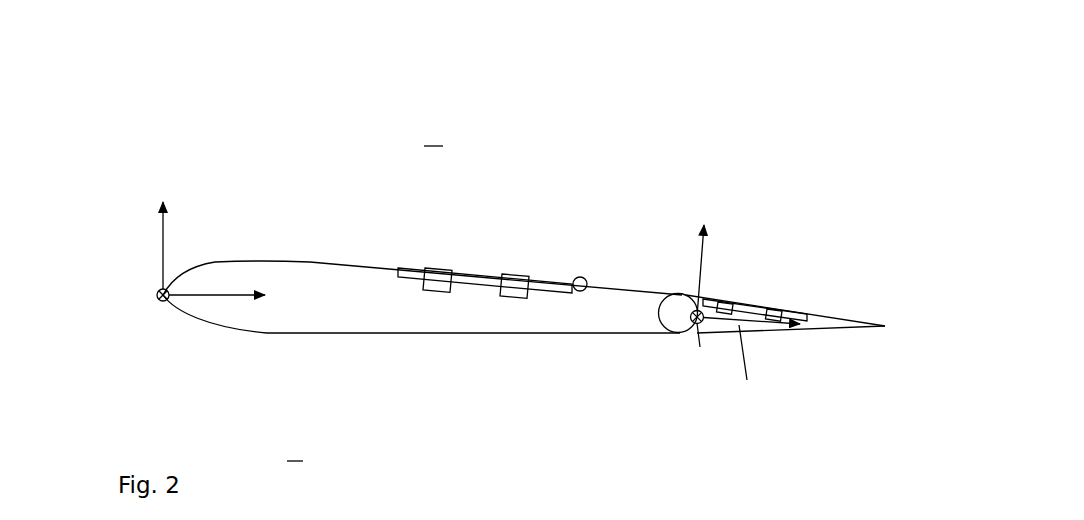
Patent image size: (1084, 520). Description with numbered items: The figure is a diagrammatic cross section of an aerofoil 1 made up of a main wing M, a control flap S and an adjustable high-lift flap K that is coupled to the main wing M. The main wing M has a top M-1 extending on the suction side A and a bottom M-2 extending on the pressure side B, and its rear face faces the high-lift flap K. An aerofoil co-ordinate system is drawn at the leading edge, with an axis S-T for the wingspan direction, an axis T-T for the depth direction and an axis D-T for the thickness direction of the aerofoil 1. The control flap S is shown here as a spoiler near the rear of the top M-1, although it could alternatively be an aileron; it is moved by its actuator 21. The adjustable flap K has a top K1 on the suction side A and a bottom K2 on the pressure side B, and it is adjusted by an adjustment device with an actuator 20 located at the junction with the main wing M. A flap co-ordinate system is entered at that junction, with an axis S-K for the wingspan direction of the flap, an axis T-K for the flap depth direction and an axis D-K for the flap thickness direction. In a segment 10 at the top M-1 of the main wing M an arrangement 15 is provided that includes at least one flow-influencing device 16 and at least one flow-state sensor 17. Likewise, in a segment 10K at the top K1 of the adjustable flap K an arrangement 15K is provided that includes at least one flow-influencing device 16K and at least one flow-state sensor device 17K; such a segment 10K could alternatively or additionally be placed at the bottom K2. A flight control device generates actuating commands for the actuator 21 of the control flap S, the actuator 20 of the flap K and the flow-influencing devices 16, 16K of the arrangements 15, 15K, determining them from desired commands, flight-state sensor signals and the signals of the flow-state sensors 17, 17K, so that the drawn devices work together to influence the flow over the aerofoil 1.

The aerofoil 1 is at (566, 134).
The segment 10 is at (480, 276).
The arrangement of flow-influencing devices 15 is at (575, 254).
The flow-influencing device 16 is at (440, 276).
The flow-state sensor 17 is at (517, 282).
The actuator of the adjustable flap 20 is at (675, 362).
The actuator of the control flap 21 is at (584, 278).
The segment 10K is at (750, 300).
The arrangement of flow-influencing devices 15K is at (838, 249).
The flow-influencing device 16K is at (727, 301).
The flow-state sensor device 17K is at (777, 308).
The main wing M is at (318, 275).
The top of the main wing M-1 is at (270, 259).
The bottom of the main wing M-2 is at (280, 333).
The adjustable flap K is at (845, 325).
The top of the flap K1 is at (840, 315).
The bottom of the flap K2 is at (777, 331).
The control flap S is at (623, 283).
The suction side A is at (433, 135).
The pressure side B is at (295, 450).
The wingspan direction axis of the aerofoil S-T is at (130, 299).
The thickness direction axis of the aerofoil D-T is at (197, 245).
The depth direction axis of the aerofoil T-T is at (217, 313).
The wingspan direction axis of the flap S-K is at (711, 343).
The thickness direction axis of the flap D-K is at (723, 252).
The depth direction axis of the flap T-K is at (752, 365).